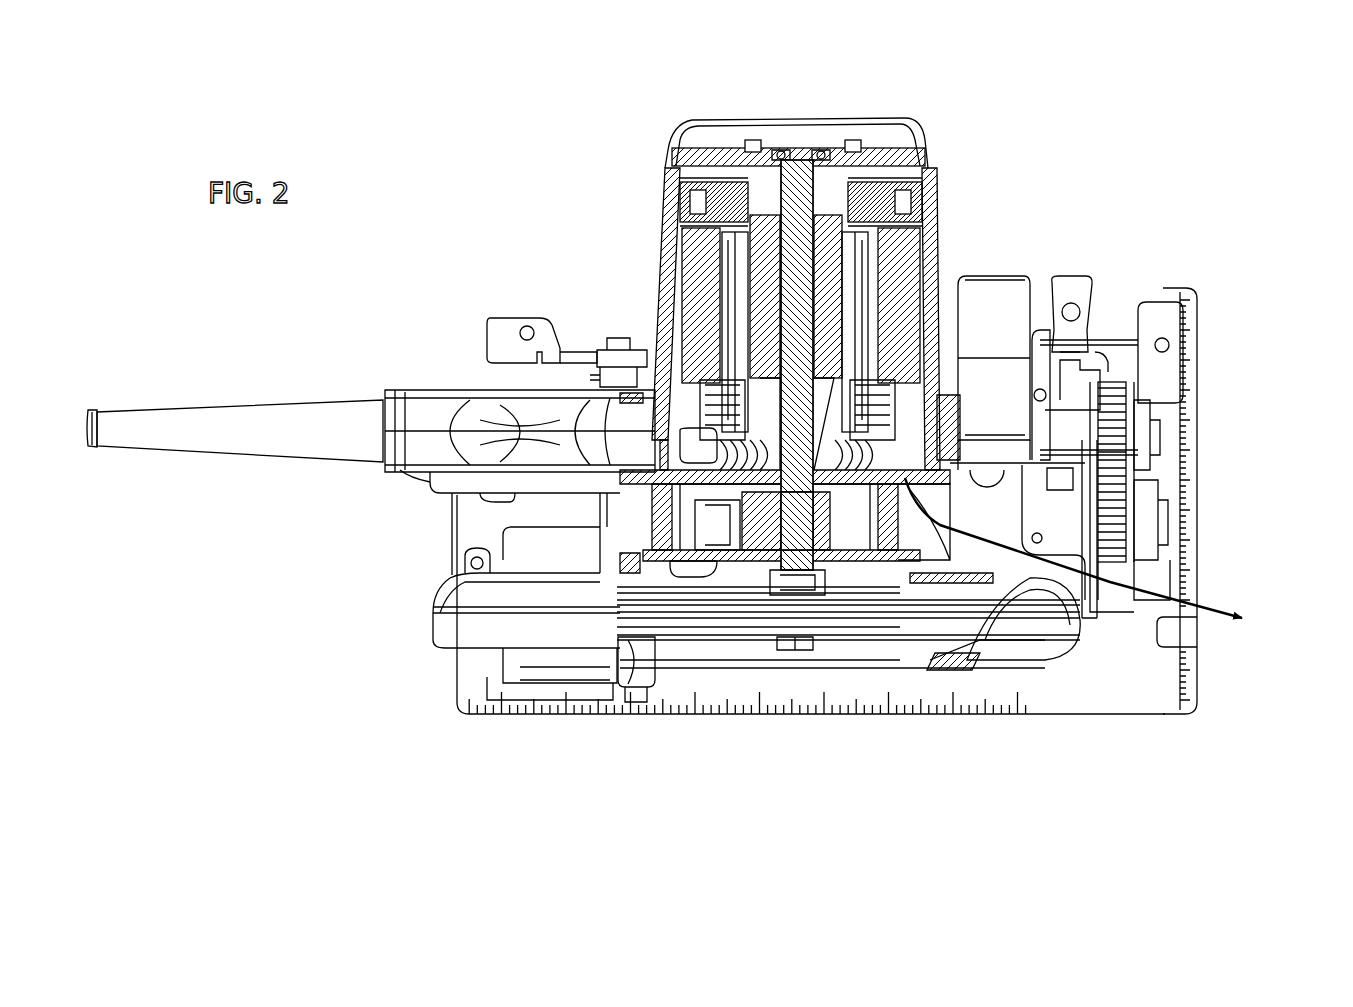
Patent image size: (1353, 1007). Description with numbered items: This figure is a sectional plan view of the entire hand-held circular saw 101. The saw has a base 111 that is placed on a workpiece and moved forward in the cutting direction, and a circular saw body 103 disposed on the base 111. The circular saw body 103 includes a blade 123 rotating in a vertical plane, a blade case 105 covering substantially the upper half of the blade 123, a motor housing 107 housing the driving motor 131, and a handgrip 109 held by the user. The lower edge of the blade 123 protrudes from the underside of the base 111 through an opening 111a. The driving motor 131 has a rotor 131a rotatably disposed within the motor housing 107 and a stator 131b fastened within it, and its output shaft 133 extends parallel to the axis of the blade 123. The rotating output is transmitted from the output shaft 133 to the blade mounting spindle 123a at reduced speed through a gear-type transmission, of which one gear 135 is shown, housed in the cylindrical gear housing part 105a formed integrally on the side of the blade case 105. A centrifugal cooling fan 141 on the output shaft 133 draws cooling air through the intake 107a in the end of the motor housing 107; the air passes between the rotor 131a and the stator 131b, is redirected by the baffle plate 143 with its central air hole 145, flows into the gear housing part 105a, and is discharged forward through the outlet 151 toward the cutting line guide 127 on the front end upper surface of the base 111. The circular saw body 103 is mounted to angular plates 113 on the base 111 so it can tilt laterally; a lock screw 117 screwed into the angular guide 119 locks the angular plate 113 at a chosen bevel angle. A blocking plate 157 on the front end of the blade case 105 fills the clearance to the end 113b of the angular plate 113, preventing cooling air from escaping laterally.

The hand-held circular saw 101 is at (1162, 242).
The circular saw body 103 is at (662, 152).
The blade case 105 is at (558, 648).
The gear housing part 105a is at (823, 620).
The motor housing 107 is at (940, 222).
The intake 107a is at (731, 155).
The handgrip 109 is at (412, 484).
The base 111 is at (1033, 718).
The opening 111a is at (862, 655).
The angular plate 113 is at (1130, 487).
The end of angular plate 113b is at (1110, 612).
The lock screw 117 is at (1178, 342).
The angular guide 119 is at (1140, 397).
The blade 123 is at (630, 685).
The blade mounting spindle 123a is at (790, 600).
The cutting line guide 127 is at (1190, 613).
The driving motor 131 is at (664, 213).
The rotor 131a is at (885, 330).
The stator 131b is at (745, 302).
The output shaft 133 is at (762, 540).
The gear 135 is at (700, 567).
The cooling fan 141 is at (716, 432).
The baffle plate 143 is at (1135, 442).
The air hole 145 is at (868, 422).
The outlet 151 is at (930, 500).
The blocking plate 157 is at (1083, 632).